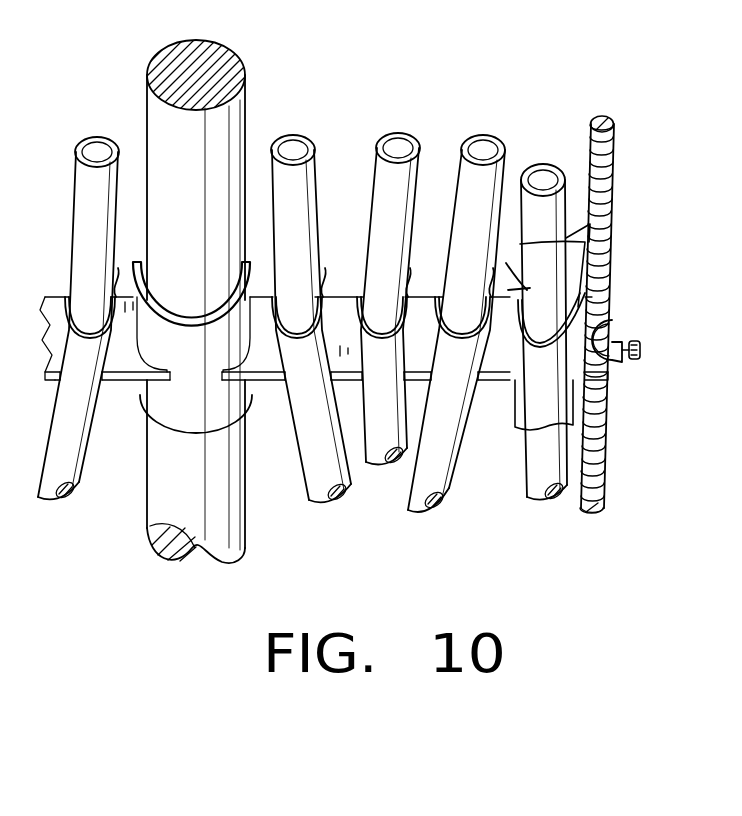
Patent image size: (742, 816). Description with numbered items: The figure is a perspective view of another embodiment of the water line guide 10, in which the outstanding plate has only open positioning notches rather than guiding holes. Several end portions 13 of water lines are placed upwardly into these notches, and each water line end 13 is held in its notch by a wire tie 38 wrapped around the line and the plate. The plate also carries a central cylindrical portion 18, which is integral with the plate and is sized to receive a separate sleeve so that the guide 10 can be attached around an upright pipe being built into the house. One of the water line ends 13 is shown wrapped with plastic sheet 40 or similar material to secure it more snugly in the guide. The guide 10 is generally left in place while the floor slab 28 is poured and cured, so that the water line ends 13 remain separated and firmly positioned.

The water line guide 10 is at (431, 262).
The end portion of a water line 13 is at (568, 167).
The central cylindrical portion 18 is at (177, 407).
The floor slab 28 is at (627, 430).
The wire tie 38 is at (612, 288).
The plastic sheet wrapping 40 is at (523, 415).